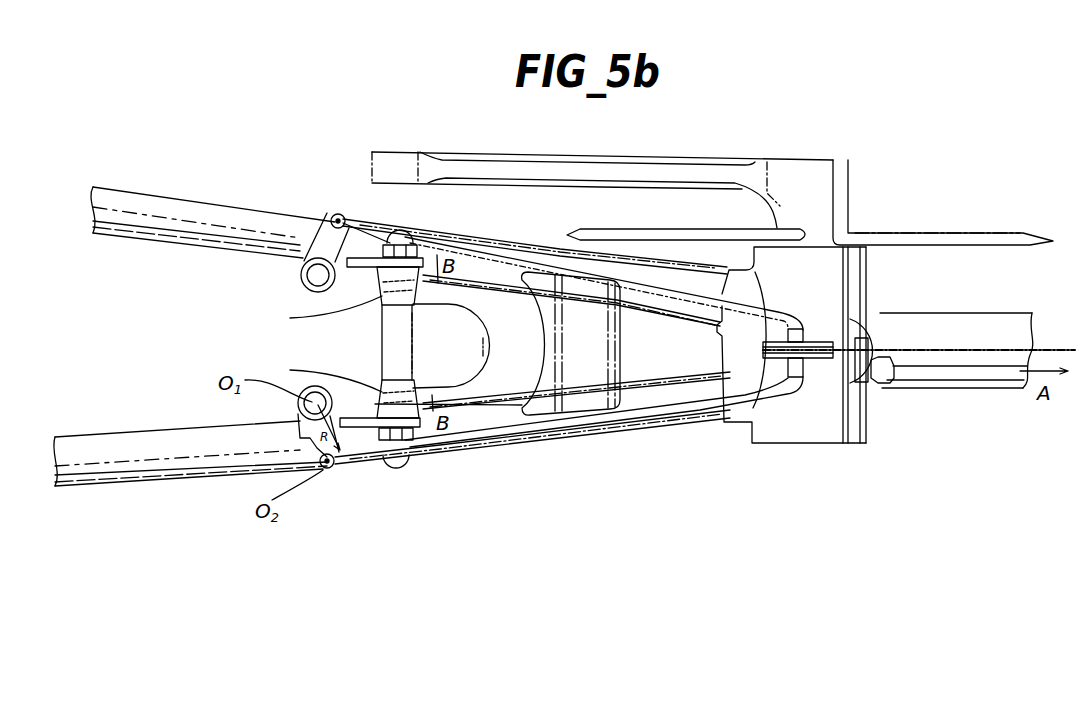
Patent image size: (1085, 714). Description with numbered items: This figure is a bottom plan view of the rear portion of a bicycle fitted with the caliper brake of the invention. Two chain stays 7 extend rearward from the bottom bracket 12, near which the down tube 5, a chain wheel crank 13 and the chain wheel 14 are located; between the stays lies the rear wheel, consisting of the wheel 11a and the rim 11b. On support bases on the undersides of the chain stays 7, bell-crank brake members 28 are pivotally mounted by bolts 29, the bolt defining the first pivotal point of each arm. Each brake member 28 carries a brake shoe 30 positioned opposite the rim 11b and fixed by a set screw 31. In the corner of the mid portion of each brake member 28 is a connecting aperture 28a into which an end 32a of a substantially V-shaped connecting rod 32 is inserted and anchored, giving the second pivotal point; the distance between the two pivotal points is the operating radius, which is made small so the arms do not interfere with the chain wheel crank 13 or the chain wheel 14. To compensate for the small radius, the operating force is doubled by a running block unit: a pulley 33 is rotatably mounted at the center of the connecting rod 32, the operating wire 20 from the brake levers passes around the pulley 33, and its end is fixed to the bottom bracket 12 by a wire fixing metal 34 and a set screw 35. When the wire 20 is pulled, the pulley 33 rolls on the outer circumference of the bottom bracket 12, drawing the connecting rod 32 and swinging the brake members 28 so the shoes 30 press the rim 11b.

The down tube 5 is at (970, 313).
The chain stay 7 is at (128, 242).
The wheel 11a is at (480, 345).
The rim 11b is at (375, 330).
The bottom bracket 12 is at (845, 443).
The chain wheel crank 13 is at (690, 157).
The chain wheel 14 is at (942, 233).
The operating wire 20 is at (1038, 350).
The brake member 28 is at (317, 240).
The connecting aperture 28a is at (353, 212).
The bolt 29 is at (300, 277).
The brake shoe 30 is at (378, 300).
The set screw 31 is at (402, 237).
The connecting rod 32 is at (630, 417).
The end of connecting rod 32a is at (332, 216).
The pulley 33 is at (820, 340).
The wire fixing metal 34 is at (870, 385).
The set screw 35 is at (894, 385).